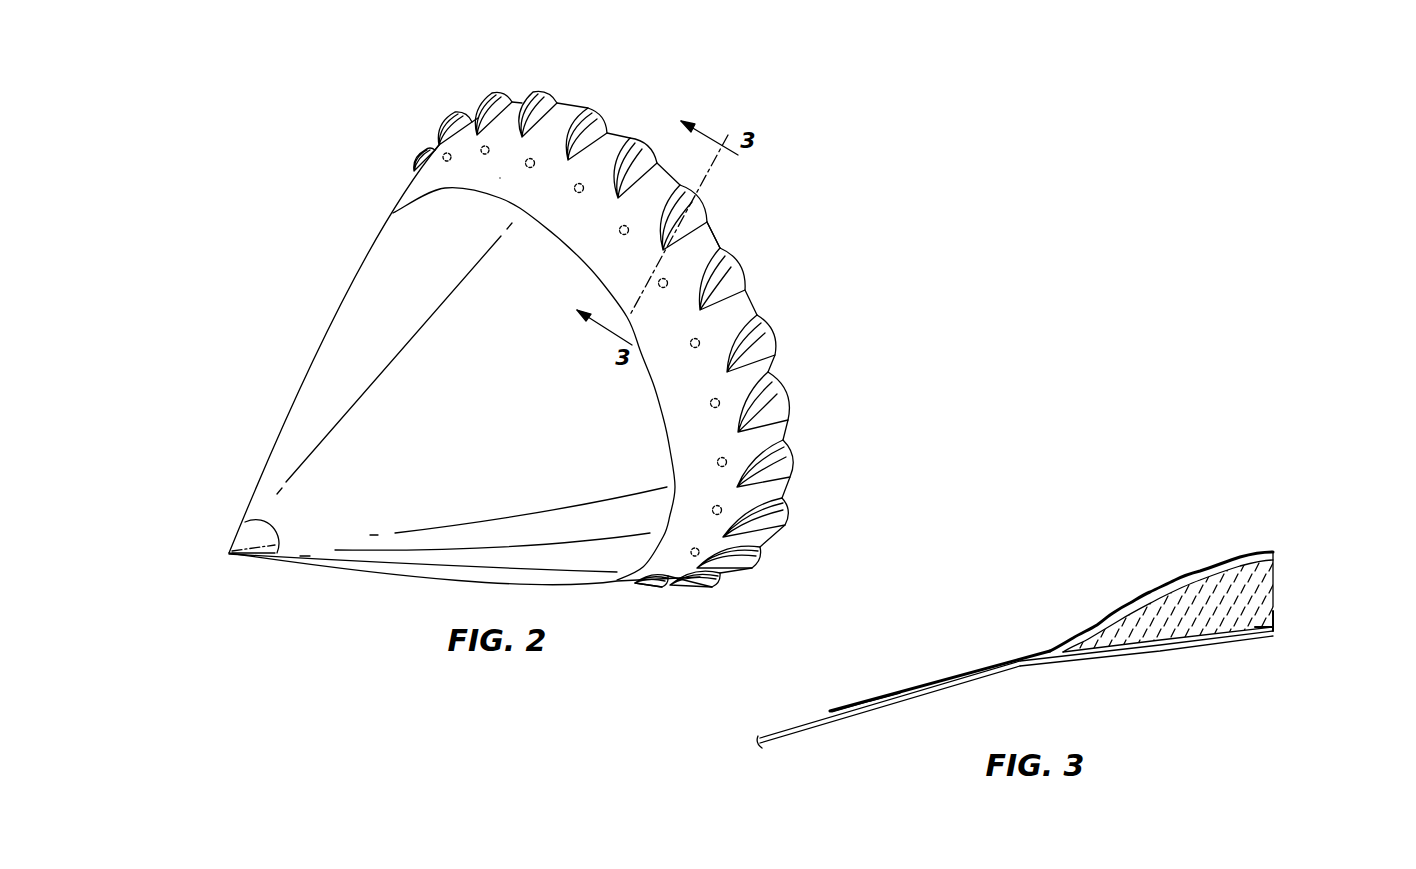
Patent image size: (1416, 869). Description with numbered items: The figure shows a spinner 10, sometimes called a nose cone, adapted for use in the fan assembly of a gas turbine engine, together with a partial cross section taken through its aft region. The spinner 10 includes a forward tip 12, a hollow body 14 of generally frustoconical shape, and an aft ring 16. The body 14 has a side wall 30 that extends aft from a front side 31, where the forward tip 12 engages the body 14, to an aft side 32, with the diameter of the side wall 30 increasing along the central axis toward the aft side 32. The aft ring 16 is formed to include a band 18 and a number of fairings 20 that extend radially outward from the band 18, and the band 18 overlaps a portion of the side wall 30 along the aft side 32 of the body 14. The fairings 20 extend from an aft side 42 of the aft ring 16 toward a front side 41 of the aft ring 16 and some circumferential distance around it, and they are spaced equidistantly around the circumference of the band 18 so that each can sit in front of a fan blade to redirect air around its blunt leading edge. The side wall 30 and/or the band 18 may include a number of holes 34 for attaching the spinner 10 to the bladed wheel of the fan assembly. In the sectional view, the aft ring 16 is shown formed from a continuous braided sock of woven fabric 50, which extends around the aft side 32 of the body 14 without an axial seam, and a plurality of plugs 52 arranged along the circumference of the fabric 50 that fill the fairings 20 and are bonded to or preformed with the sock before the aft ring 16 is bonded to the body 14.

In FIG. 2, the spinner 10 is at (310, 131).
In FIG. 2, the forward tip 12 is at (241, 562).
In FIG. 2, the body 14 is at (317, 380).
In FIG. 3, the body 14 is at (777, 734).
In FIG. 2, the aft ring 16 is at (622, 130).
In FIG. 3, the aft ring 16 is at (1073, 618).
In FIG. 2, the band 18 is at (506, 170).
In FIG. 3, the band 18 is at (933, 684).
In FIG. 2, the fairings 20 is at (542, 97).
In FIG. 3, the fairings 20 is at (1148, 590).
In FIG. 2, the side wall 30 is at (386, 514).
In FIG. 3, the side wall 30 is at (807, 726).
In FIG. 2, the front side 31 is at (265, 562).
In FIG. 3, the aft side 32 is at (1276, 628).
In FIG. 2, the holes 34 is at (720, 402).
In FIG. 2, the front side 41 is at (653, 378).
In FIG. 3, the front side 41 is at (833, 713).
In FIG. 2, the aft side 42 is at (725, 233).
In FIG. 3, the aft side 42 is at (1274, 553).
In FIG. 3, the continuous braided sock of woven fabric 50 is at (855, 703).
In FIG. 3, the plugs 52 is at (1188, 622).